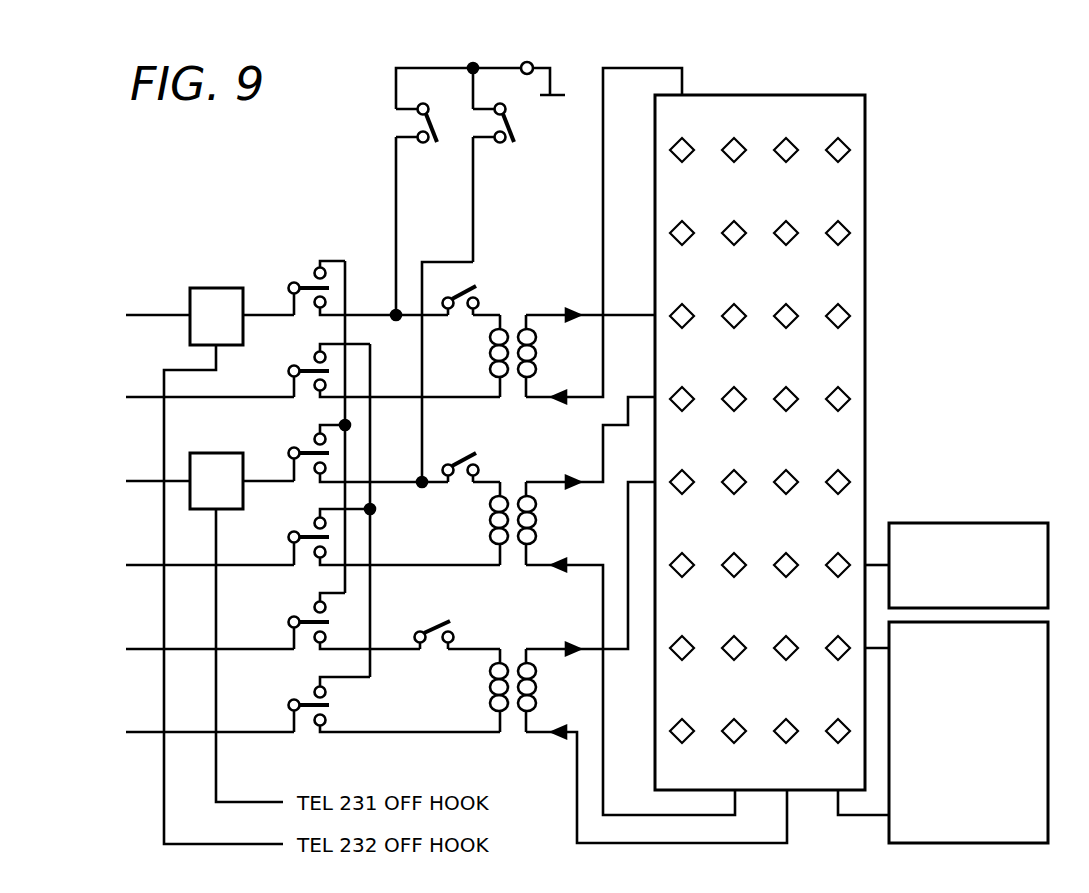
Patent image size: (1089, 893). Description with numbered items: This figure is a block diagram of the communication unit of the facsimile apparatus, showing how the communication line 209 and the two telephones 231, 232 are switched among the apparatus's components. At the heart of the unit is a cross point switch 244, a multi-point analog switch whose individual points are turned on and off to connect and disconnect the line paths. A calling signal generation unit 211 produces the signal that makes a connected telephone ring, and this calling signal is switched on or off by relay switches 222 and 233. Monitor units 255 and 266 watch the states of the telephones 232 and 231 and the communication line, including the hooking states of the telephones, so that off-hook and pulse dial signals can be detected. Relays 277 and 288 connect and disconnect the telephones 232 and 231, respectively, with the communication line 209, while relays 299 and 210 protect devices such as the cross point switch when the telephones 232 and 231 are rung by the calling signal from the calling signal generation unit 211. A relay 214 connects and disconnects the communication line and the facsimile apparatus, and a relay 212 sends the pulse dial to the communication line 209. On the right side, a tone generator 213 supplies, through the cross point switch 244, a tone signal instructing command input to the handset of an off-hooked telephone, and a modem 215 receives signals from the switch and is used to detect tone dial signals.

The communication line 209 is at (172, 690).
The relay 210 is at (458, 480).
The calling signal generation unit 211 is at (533, 64).
The relay 212 is at (433, 649).
The tone generator 213 is at (983, 523).
The relay 214 is at (306, 640).
The modem 215 is at (889, 830).
The relay switch 222 is at (400, 124).
The telephone 231 is at (178, 523).
The telephone 232 is at (178, 356).
The relay switch 233 is at (513, 128).
The cross point switch 244 is at (823, 96).
The monitor unit 255 is at (205, 288).
The monitor unit 266 is at (207, 453).
The relay 277 is at (306, 305).
The relay 288 is at (306, 471).
The relay 299 is at (456, 312).